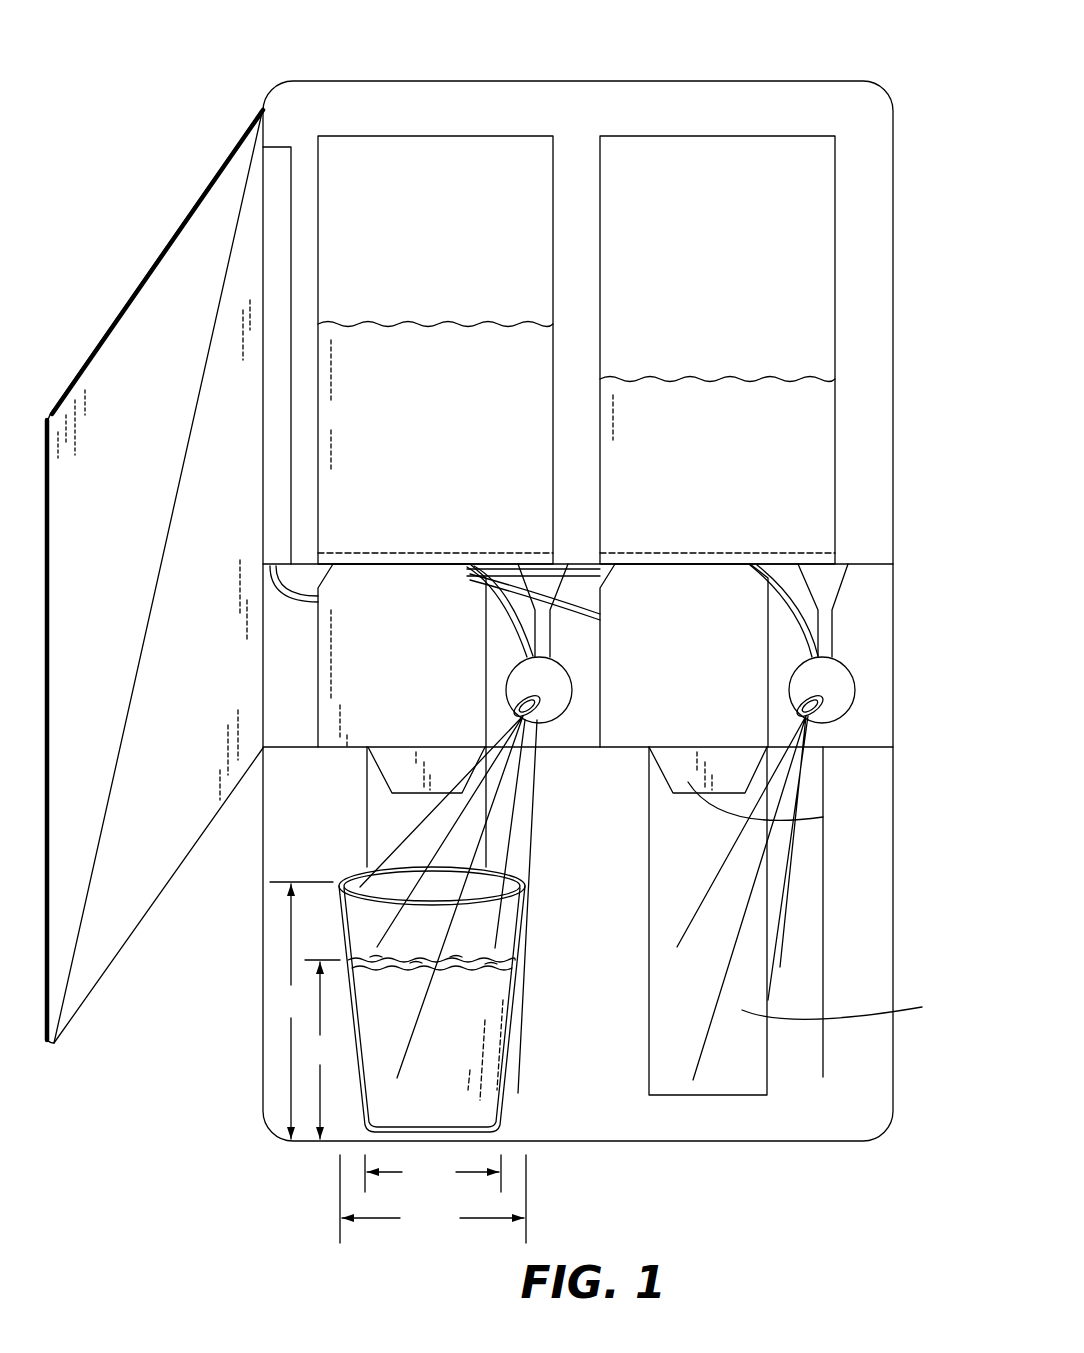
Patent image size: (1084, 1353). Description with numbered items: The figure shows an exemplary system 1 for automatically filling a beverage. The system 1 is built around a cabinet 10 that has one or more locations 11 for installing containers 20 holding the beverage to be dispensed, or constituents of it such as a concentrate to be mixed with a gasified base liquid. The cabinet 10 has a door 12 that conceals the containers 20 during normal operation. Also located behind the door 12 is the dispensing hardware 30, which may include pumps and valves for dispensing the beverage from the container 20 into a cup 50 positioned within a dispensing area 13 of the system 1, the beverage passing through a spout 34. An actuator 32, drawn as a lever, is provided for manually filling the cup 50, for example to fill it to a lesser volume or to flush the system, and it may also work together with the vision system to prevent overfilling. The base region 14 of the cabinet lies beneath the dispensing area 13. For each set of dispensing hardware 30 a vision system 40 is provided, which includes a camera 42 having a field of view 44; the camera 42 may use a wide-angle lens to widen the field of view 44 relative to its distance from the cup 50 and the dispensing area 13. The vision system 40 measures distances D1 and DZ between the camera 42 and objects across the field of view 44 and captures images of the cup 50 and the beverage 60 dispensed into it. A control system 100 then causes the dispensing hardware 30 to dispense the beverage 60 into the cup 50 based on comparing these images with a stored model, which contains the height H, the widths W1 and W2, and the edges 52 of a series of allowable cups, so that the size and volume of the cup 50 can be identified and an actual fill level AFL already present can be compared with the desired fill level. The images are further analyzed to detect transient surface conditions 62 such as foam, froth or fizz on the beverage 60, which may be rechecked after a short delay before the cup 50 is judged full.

The system 1 is at (902, 52).
The cabinet 10 is at (895, 166).
The location 11 is at (394, 130).
The door 12 is at (102, 385).
The dispensing area 13 is at (541, 1054).
The base 14 is at (312, 1144).
The container 20 is at (485, 188).
The dispensing hardware 30 is at (410, 632).
The actuator 32 is at (848, 1005).
The spout 34 is at (823, 817).
The vision system 40 is at (570, 657).
The camera 42 is at (546, 700).
The field of view 44 is at (594, 991).
The cup 50 is at (515, 1084).
The edges 52 is at (340, 875).
The beverage 60 is at (445, 1090).
The transient surface conditions 62 is at (476, 955).
The control system 100 is at (281, 138).
The height H is at (290, 1011).
The actual fill level AFL is at (321, 1049).
The width W1 is at (433, 1173).
The width W2 is at (433, 1199).
The distance DZ is at (402, 845).
The distance D1 is at (541, 823).